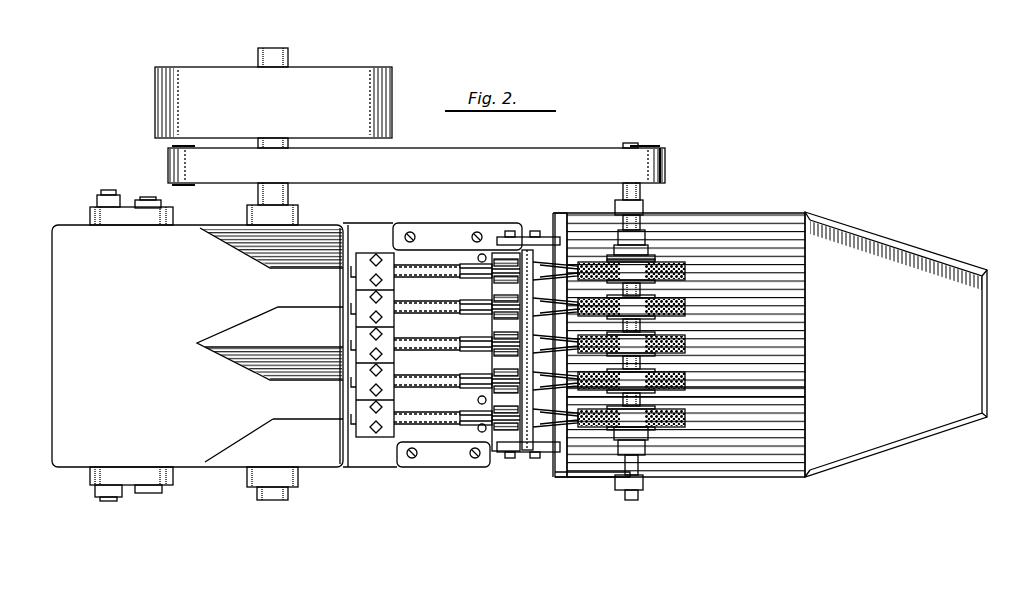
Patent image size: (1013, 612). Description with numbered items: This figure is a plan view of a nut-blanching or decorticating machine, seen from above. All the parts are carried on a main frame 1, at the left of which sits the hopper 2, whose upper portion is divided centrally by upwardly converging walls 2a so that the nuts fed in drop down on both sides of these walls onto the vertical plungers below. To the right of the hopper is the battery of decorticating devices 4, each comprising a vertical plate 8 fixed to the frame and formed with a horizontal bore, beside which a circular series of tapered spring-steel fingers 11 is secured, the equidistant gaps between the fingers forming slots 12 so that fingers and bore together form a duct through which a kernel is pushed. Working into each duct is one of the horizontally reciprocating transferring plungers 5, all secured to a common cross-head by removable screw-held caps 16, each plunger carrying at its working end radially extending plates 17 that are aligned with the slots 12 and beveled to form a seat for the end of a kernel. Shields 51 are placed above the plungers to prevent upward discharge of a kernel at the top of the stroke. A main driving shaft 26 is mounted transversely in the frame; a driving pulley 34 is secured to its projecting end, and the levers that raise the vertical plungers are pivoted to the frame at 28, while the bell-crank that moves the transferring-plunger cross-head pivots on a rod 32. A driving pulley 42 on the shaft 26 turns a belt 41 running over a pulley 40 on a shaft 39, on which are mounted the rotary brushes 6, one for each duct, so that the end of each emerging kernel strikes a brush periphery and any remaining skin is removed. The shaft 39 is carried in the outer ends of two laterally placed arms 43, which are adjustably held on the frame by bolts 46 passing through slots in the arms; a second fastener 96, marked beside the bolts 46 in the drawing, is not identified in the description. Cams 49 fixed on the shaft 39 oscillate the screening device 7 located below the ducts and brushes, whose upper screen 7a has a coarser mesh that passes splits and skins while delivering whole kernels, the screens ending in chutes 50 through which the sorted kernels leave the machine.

The main frame 1 is at (431, 467).
The hopper 2 is at (197, 346).
The walls 2a is at (270, 343).
The decorticating devices 4 is at (527, 250).
The transferring plungers 5 is at (427, 312).
The rotary brushes 6 is at (668, 266).
The screening device 7 is at (679, 345).
The upper screen 7a is at (686, 390).
The vertical plate 8 is at (502, 250).
The fingers 11 is at (551, 428).
The slots 12 is at (565, 425).
The screw-held caps 16 is at (365, 255).
The radially extending plates 17 is at (462, 260).
The main driving shaft 26 is at (284, 48).
The pivot 28 is at (172, 212).
The rod 32 is at (145, 200).
The driving pulley 34 is at (273, 102).
The shaft 39 is at (633, 143).
The pulley 40 is at (662, 150).
The belt 41 is at (416, 165).
The driving pulley 42 is at (334, 186).
The arms 43 is at (578, 240).
The bolts 46 is at (506, 459).
The stud 96 is at (533, 459).
The cams 49 is at (648, 206).
The chutes 50 is at (896, 344).
The shields 51 is at (491, 285).